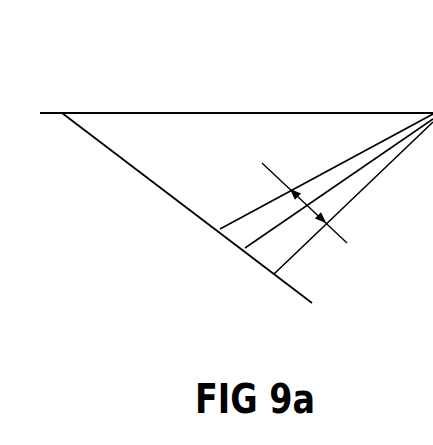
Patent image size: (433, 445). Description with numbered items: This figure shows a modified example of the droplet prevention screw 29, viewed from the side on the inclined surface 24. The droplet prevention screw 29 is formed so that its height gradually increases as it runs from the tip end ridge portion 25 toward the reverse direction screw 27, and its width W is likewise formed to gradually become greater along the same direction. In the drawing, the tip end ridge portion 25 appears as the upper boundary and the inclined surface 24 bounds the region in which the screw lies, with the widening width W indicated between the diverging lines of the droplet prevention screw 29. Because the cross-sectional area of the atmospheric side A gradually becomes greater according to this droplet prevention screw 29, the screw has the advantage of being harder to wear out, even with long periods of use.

The inclined surface 24 is at (205, 192).
The tip end ridge portion 25 is at (308, 112).
The reverse direction screw 27 is at (105, 144).
The droplet prevention screw 29 is at (266, 254).
The width W is at (313, 216).
The atmospheric side A is at (317, 277).